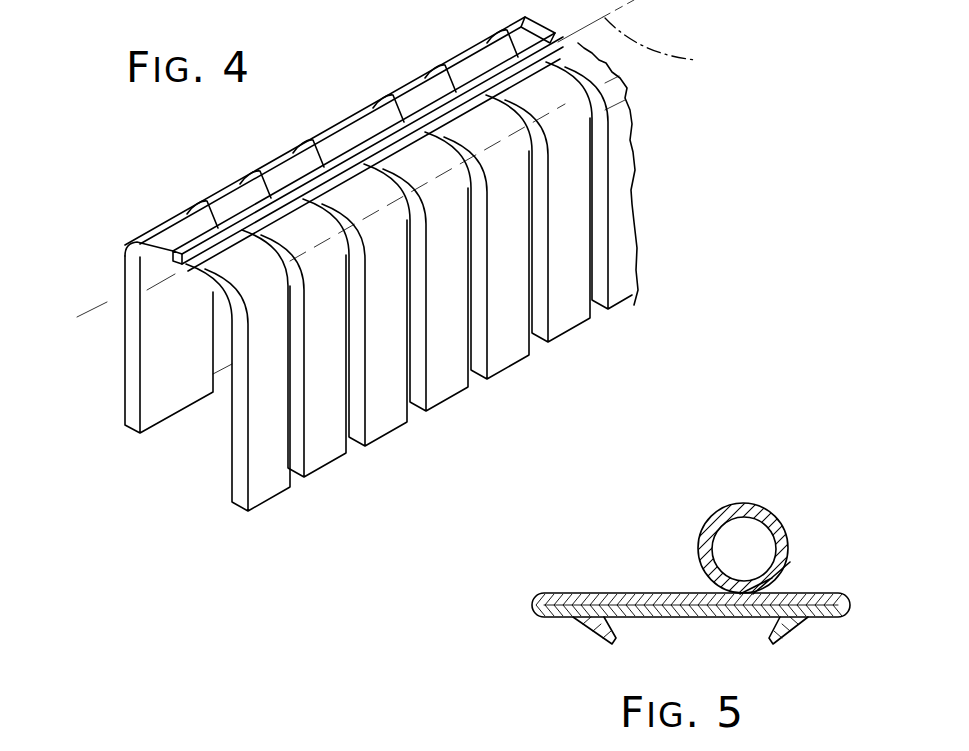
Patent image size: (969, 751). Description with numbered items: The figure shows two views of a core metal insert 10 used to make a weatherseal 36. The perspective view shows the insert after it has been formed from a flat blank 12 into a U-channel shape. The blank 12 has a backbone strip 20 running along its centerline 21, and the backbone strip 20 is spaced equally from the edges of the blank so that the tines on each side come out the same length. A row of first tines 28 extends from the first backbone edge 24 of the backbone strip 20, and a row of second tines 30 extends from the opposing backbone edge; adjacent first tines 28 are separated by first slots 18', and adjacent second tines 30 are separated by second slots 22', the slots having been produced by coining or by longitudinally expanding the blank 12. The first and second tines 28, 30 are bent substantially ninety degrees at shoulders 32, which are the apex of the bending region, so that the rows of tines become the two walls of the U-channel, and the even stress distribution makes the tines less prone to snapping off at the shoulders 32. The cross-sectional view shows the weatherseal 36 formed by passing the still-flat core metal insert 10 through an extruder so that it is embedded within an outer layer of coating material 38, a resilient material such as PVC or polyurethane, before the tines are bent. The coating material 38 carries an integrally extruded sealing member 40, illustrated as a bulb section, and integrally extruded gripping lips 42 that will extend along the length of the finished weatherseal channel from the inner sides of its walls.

In FIG. 4, the core metal insert 10 is at (353, 82).
In FIG. 5, the core metal insert 10 is at (807, 593).
In FIG. 4, the blank 12 is at (163, 223).
In FIG. 4, the first slots 18' is at (349, 129).
In FIG. 4, the backbone strip 20 is at (527, 25).
In FIG. 4, the centerline 21 is at (668, 45).
In FIG. 4, the second slots 22' is at (437, 293).
In FIG. 5, the first backbone edge 24 is at (657, 618).
In FIG. 4, the first tines 28 is at (123, 398).
In FIG. 4, the second tines 30 is at (233, 477).
In FIG. 4, the shoulders 32 is at (500, 157).
In FIG. 5, the weatherseal 36 is at (582, 673).
In FIG. 5, the coating material 38 is at (850, 603).
In FIG. 5, the sealing member 40 is at (738, 503).
In FIG. 5, the gripping lips 42 is at (600, 630).